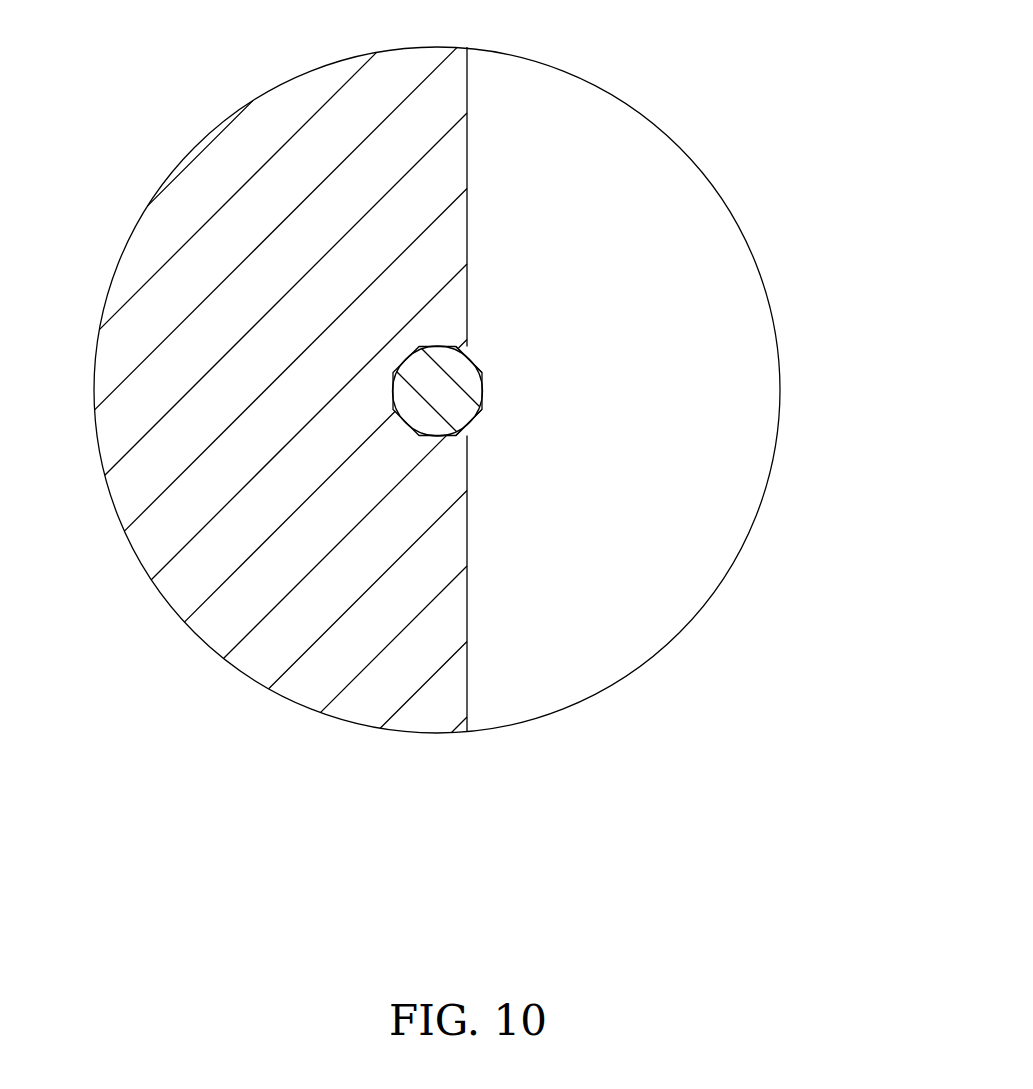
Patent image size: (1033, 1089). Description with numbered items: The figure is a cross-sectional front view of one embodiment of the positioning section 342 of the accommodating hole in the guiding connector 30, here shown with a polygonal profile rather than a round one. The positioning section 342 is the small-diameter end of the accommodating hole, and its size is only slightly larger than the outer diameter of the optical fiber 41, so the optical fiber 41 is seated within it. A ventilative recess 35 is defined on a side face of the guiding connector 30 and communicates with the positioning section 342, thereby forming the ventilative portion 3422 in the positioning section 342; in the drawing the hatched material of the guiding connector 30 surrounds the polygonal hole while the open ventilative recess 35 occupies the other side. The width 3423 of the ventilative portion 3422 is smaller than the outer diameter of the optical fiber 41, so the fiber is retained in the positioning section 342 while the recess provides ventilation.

The guiding connector 30 is at (230, 142).
The ventilative recess 35 is at (647, 265).
The optical fiber 41 is at (438, 392).
The positioning section 342 is at (406, 428).
The ventilative portion 3422 is at (483, 407).
The width 3423 is at (475, 352).